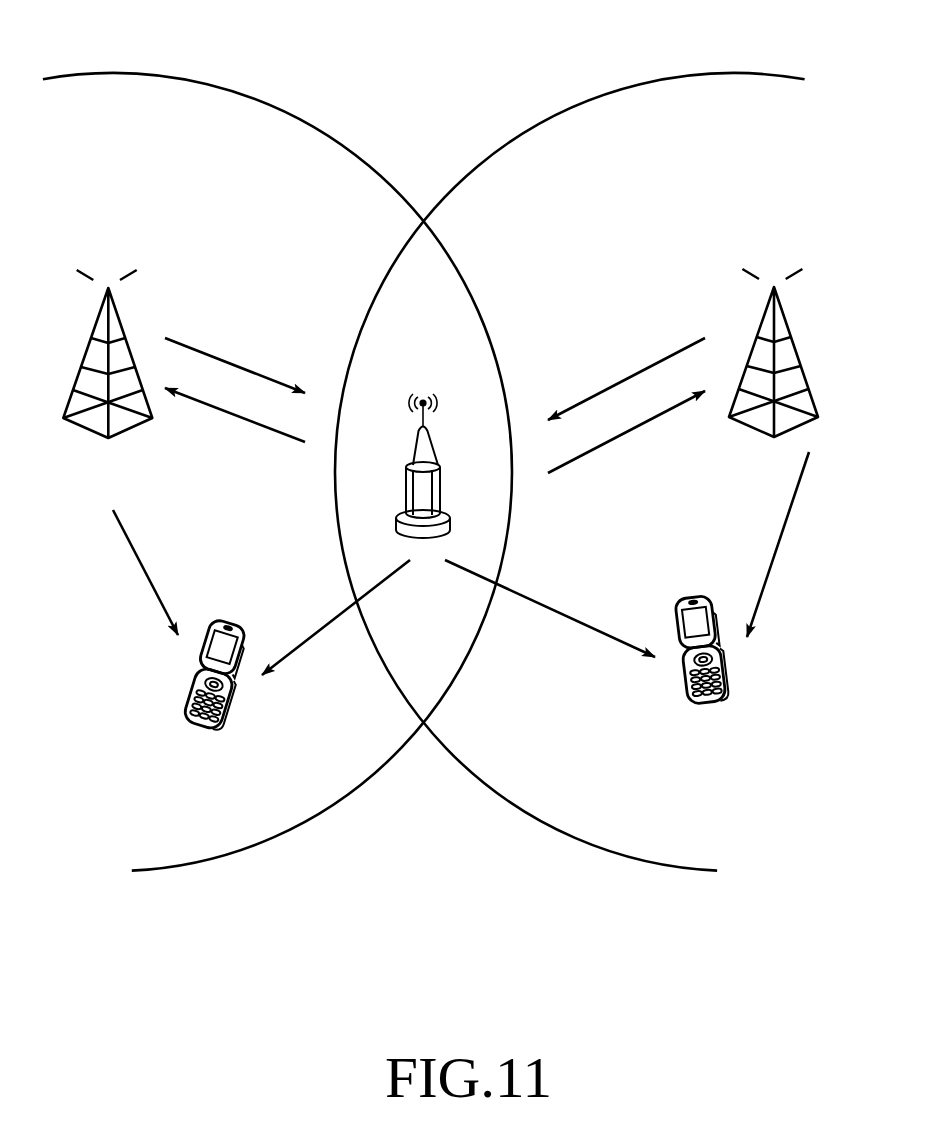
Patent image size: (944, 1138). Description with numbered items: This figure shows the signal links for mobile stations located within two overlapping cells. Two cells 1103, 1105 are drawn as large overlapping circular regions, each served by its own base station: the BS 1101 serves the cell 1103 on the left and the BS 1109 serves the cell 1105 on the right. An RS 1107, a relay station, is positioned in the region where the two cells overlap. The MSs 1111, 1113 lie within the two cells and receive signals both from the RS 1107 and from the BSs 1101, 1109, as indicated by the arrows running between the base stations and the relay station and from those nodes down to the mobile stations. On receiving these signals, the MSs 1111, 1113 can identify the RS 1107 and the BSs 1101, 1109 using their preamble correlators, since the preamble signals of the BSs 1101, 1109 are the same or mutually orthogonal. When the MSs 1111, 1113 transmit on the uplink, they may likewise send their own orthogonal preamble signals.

The BS 1101 is at (108, 280).
The cell 1103 is at (118, 72).
The cell 1105 is at (740, 70).
The RS 1107 is at (425, 400).
The BS 1109 is at (774, 279).
The MS 1111 is at (232, 619).
The MS 1113 is at (695, 596).